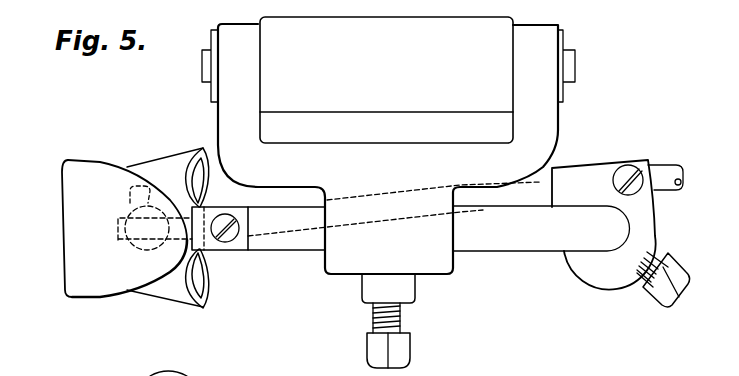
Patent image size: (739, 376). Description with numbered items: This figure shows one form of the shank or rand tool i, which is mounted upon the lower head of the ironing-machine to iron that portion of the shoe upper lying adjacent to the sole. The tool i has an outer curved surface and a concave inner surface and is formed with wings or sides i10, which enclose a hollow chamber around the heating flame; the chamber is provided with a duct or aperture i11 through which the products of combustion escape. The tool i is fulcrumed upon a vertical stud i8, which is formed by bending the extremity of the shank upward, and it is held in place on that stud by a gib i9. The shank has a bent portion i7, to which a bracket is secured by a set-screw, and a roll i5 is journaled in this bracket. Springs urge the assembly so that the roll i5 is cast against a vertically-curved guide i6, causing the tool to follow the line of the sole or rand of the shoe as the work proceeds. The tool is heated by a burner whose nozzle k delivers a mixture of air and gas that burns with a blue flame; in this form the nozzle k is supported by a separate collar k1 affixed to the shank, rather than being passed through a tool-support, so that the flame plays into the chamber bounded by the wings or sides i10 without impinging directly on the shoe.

The shank or rand tool i is at (62, 238).
The roll i5 is at (388, 145).
The vertically-curved guide i6 is at (400, 318).
The bent portion of the shank i7 is at (510, 247).
The vertical stud i8 is at (150, 250).
The gib i9 is at (243, 243).
The wings or sides i10 is at (200, 293).
The duct or aperture i11 is at (143, 200).
The nozzle k is at (537, 193).
The collar k1 is at (590, 270).